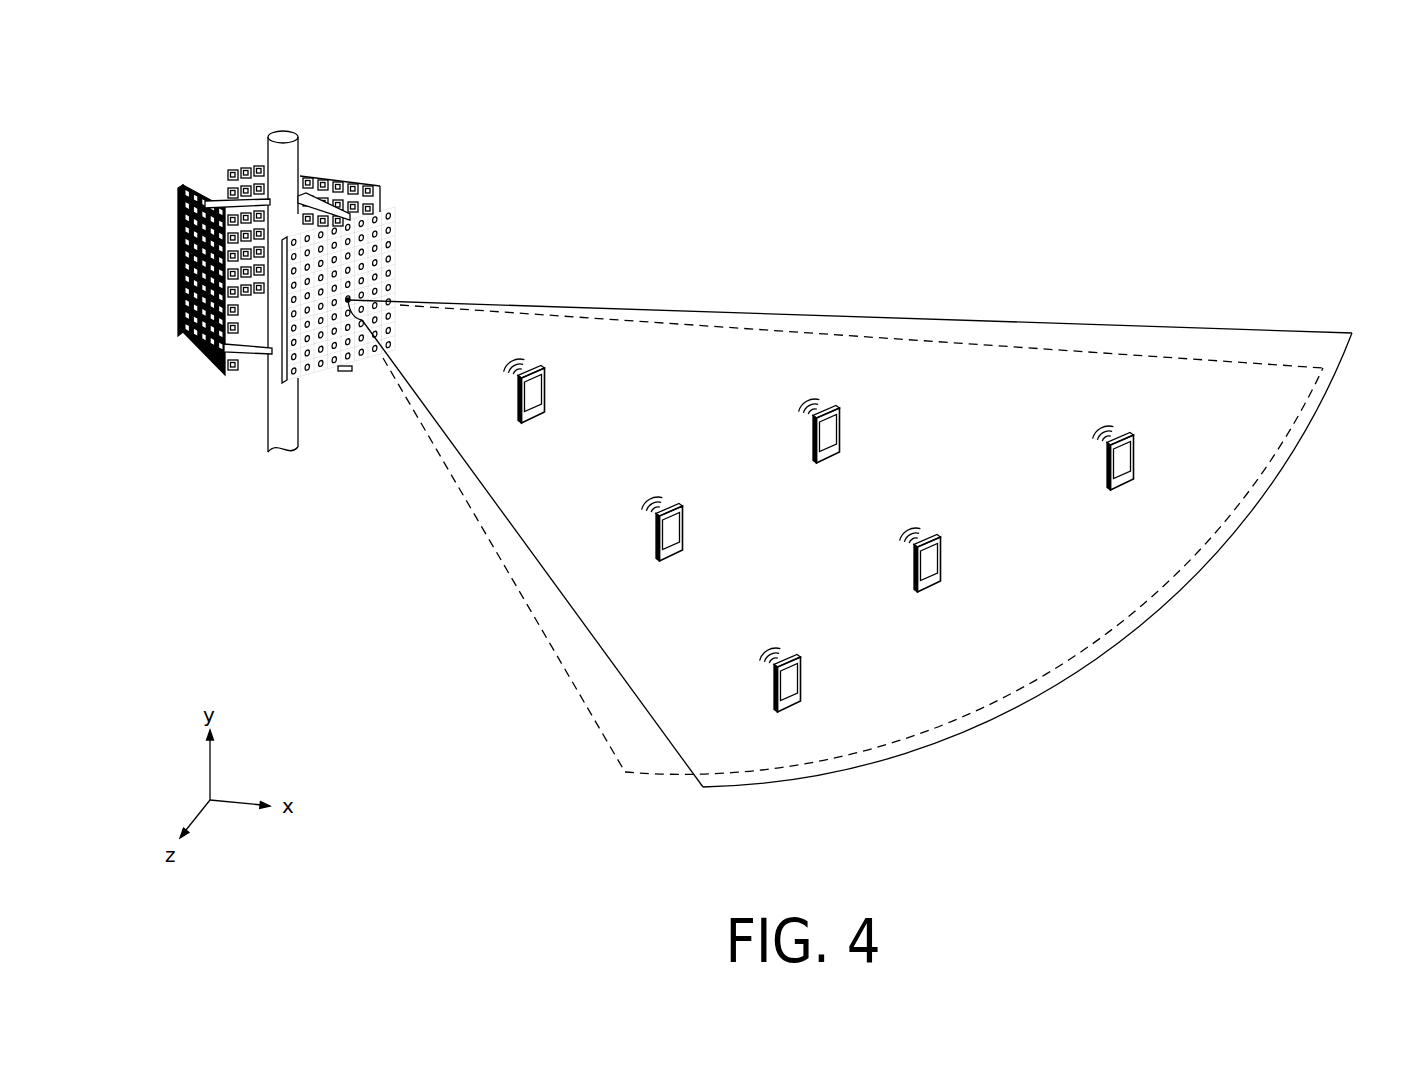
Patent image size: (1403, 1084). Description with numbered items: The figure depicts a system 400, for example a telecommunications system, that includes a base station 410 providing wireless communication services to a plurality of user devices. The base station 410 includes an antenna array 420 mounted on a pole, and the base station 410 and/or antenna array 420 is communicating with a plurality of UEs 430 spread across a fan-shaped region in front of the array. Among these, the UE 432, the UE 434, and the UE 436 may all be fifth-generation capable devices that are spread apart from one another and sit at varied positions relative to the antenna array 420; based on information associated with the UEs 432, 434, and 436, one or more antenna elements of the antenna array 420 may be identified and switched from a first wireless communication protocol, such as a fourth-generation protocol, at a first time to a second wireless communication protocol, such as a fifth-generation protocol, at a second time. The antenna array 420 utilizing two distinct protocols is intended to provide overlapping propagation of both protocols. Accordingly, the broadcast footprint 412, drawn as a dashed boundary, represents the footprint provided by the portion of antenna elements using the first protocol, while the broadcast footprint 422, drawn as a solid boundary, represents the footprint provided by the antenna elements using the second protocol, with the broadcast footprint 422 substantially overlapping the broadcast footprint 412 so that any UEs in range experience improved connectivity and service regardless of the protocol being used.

The system 400 is at (188, 110).
The base station 410 is at (344, 136).
The broadcast footprint 412 is at (512, 572).
The antenna array 420 is at (365, 390).
The broadcast footprint 422 is at (903, 318).
The plurality of UEs 430 is at (713, 346).
The UE 432 is at (1137, 462).
The UE 434 is at (547, 394).
The UE 436 is at (805, 683).